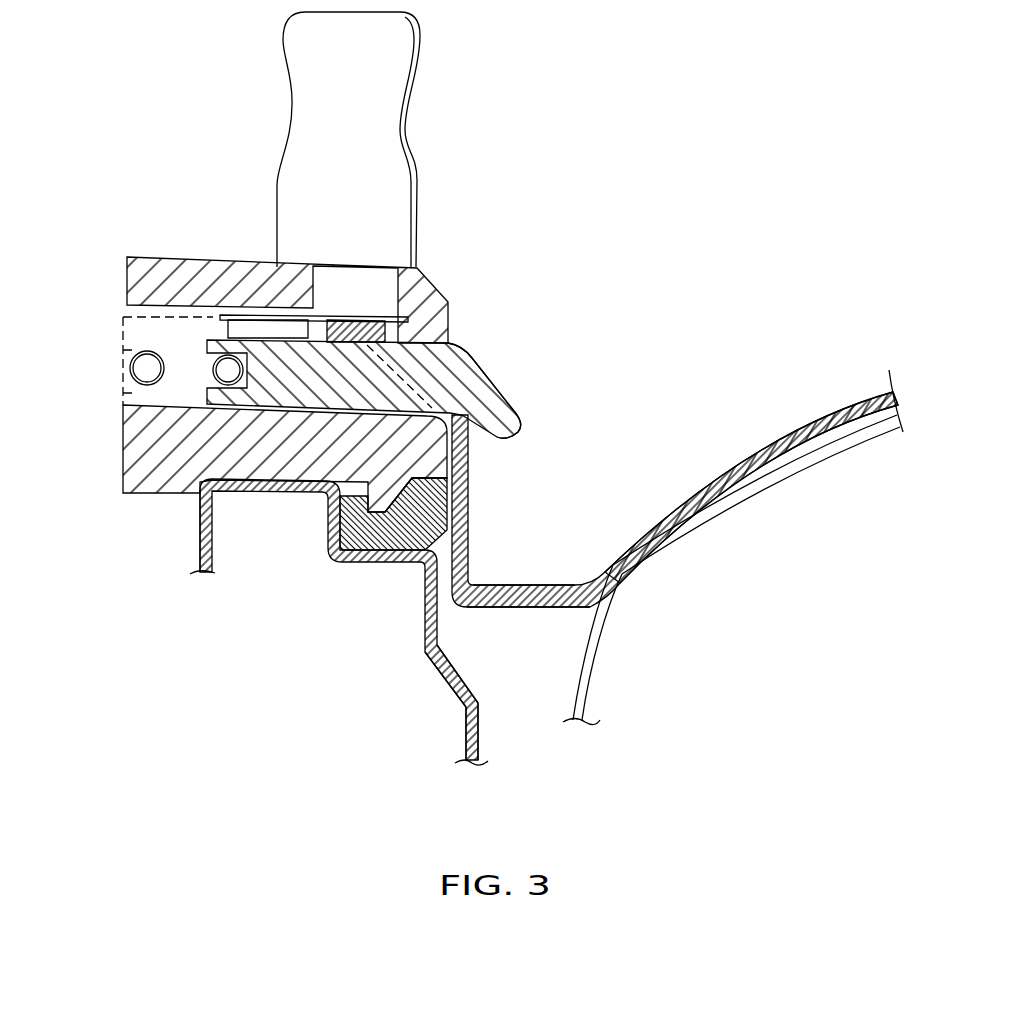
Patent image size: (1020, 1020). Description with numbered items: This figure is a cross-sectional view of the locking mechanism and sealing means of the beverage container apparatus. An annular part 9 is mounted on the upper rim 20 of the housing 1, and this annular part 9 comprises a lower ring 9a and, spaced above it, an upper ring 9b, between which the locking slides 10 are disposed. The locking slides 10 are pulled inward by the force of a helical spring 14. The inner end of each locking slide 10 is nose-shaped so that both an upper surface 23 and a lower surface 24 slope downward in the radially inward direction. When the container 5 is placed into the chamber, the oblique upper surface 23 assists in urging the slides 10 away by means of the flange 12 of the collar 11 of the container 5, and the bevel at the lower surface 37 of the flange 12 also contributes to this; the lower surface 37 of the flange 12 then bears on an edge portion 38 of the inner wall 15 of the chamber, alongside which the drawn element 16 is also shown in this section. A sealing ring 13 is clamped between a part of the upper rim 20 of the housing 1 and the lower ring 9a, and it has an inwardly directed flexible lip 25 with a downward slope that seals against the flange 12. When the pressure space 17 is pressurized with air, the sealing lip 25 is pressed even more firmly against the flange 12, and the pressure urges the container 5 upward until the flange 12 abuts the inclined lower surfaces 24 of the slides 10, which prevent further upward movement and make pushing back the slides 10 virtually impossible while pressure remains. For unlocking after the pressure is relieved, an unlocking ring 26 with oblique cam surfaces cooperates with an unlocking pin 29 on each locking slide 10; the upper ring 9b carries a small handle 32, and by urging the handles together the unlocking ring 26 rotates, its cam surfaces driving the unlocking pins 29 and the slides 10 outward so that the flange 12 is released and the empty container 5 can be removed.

The housing 1 is at (192, 584).
The container 5 is at (733, 495).
The annular part 9 is at (246, 380).
The lower ring 9a is at (158, 473).
The upper ring 9b is at (155, 283).
The locking slide 10 is at (435, 372).
The collar 11 is at (750, 470).
The flange 12 is at (470, 485).
The sealing ring 13 is at (372, 553).
The helical spring 14 is at (212, 370).
The inner wall of the chamber 15 is at (480, 738).
The inner surface 16 is at (582, 650).
The pressure space 17 is at (525, 677).
The upper rim of the housing 20 is at (271, 494).
The upper surface 23 is at (497, 393).
The lower surface 24 is at (490, 432).
The flexible lip 25 is at (440, 533).
The unlocking ring 26 is at (357, 318).
The unlocking pin 29 is at (242, 320).
The small handle 32 is at (393, 55).
The lower surface of the flange 37 is at (465, 593).
The edge portion 38 is at (445, 680).